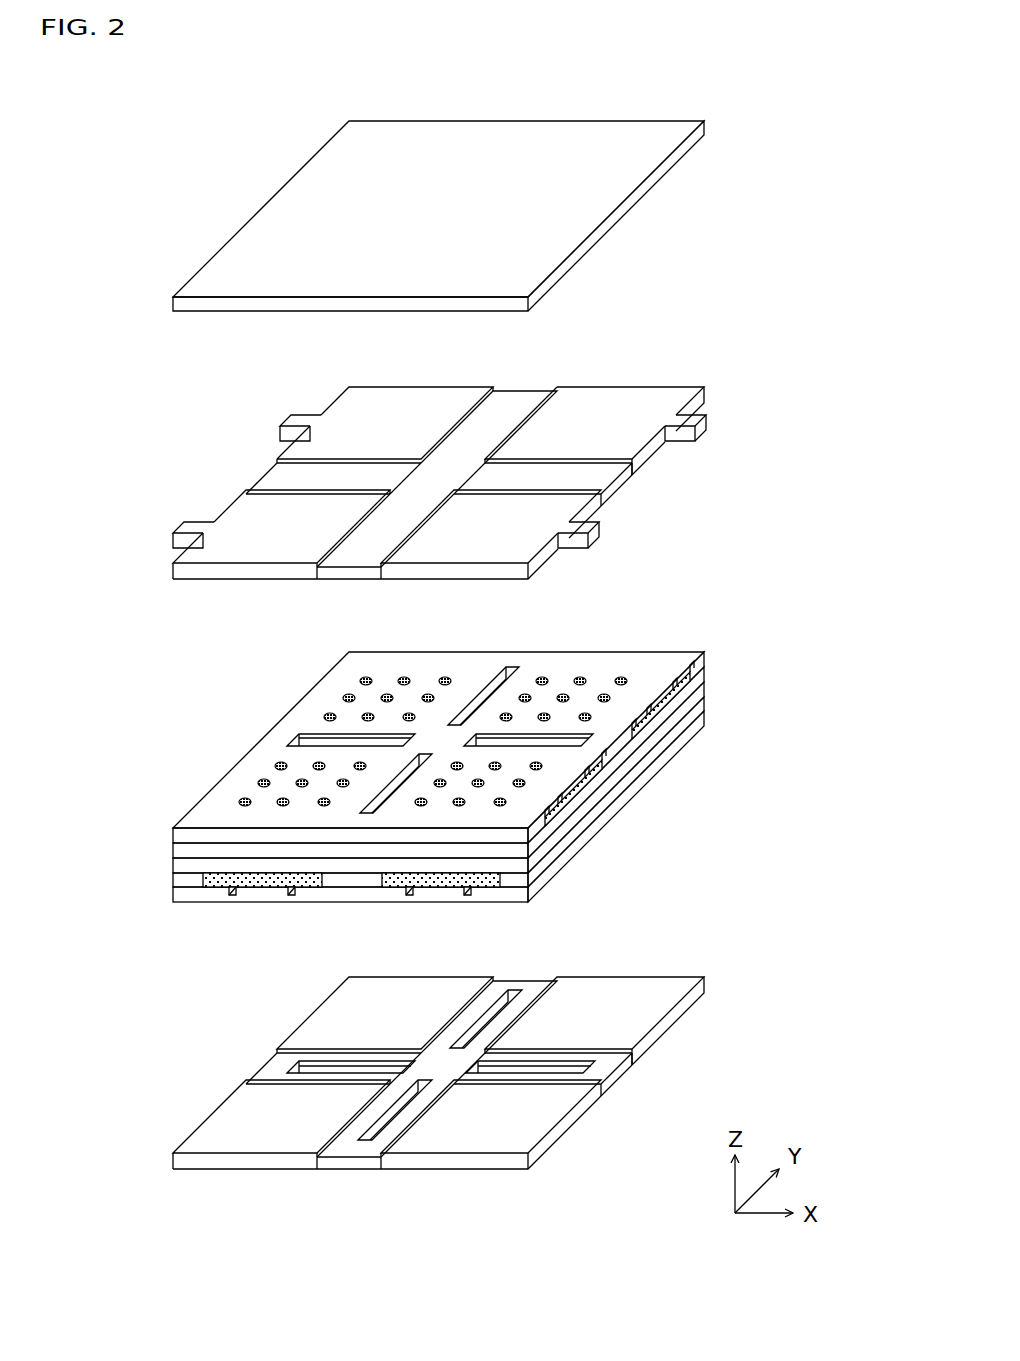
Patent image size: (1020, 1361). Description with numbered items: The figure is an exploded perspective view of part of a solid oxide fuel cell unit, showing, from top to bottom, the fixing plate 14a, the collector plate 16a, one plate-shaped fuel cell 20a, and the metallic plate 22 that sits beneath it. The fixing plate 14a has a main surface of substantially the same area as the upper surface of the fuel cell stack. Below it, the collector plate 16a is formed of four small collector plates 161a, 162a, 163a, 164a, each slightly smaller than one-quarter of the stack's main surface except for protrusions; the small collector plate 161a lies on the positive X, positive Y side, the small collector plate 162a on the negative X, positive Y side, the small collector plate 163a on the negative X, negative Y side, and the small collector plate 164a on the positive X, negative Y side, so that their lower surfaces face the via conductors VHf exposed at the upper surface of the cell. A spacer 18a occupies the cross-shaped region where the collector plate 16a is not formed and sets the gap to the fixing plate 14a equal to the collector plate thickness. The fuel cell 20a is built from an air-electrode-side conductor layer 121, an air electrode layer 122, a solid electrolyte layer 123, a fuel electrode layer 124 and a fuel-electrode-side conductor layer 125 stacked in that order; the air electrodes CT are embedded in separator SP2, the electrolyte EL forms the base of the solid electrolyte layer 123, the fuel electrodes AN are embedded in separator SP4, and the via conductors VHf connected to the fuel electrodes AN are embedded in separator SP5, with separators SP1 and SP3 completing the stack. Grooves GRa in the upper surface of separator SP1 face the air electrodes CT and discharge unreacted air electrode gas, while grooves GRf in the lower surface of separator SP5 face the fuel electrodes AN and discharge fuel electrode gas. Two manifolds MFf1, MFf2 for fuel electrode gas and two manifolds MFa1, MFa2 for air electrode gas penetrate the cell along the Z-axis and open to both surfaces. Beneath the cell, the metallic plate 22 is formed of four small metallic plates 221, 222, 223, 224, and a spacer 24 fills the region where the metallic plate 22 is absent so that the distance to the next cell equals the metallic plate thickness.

The fixing plate 14a is at (280, 222).
The collector plate 16a is at (429, 462).
The small collector plate 161a is at (617, 398).
The small collector plate 162a is at (397, 398).
The small collector plate 163a is at (233, 520).
The small collector plate 164a is at (545, 525).
The spacer 18a is at (622, 480).
The fuel cell 20a is at (443, 773).
The via conductors VHf is at (447, 674).
The manifold for air electrode gas MFa1 is at (527, 738).
The manifold for air electrode gas MFa2 is at (342, 736).
The manifold for fuel electrode gas MFf1 is at (502, 678).
The manifold for fuel electrode gas MFf2 is at (385, 790).
The air-electrode-side conductor layer 121 is at (712, 717).
The air electrode layer 122 is at (712, 702).
The solid electrolyte layer 123 is at (712, 687).
The fuel electrode layer 124 is at (712, 675).
The fuel-electrode-side conductor layer 125 is at (712, 657).
The separator SP1 is at (172, 895).
The separator SP2 is at (172, 881).
The third sheet SP3 is at (172, 866).
The separator SP4 is at (172, 851).
The separator SP5 is at (172, 836).
The grooves GRf is at (600, 780).
The fuel electrodes AN is at (640, 742).
The electrolyte EL is at (572, 830).
The air electrodes CT is at (393, 882).
The grooves GRa is at (292, 895).
The metallic plate 22 is at (404, 1053).
The small metallic plate 221 is at (617, 985).
The small metallic plate 222 is at (337, 1007).
The small metallic plate 223 is at (217, 1127).
The small metallic plate 224 is at (542, 1123).
The spacer 24 is at (622, 1067).